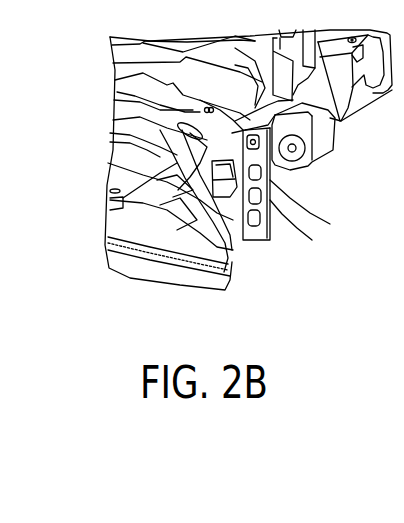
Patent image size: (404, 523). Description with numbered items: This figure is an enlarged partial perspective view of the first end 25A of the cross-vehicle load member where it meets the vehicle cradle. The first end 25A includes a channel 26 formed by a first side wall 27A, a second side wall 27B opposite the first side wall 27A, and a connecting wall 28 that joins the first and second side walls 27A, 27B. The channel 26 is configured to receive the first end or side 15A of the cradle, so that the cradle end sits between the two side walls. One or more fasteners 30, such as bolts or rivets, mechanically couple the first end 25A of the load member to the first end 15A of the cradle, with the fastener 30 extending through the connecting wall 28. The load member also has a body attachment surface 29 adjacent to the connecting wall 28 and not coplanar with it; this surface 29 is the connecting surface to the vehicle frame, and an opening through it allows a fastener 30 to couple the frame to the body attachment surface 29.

The body attachment surface 29 is at (128, 94).
The connecting wall 28 is at (152, 151).
The channel 26 is at (152, 219).
The first side wall 27A is at (194, 232).
The first end or side of the cradle 15A is at (277, 231).
The first end of the cross-vehicle load member 25A is at (314, 221).
The second side wall 27B is at (306, 164).
The fastener 30 is at (346, 113).